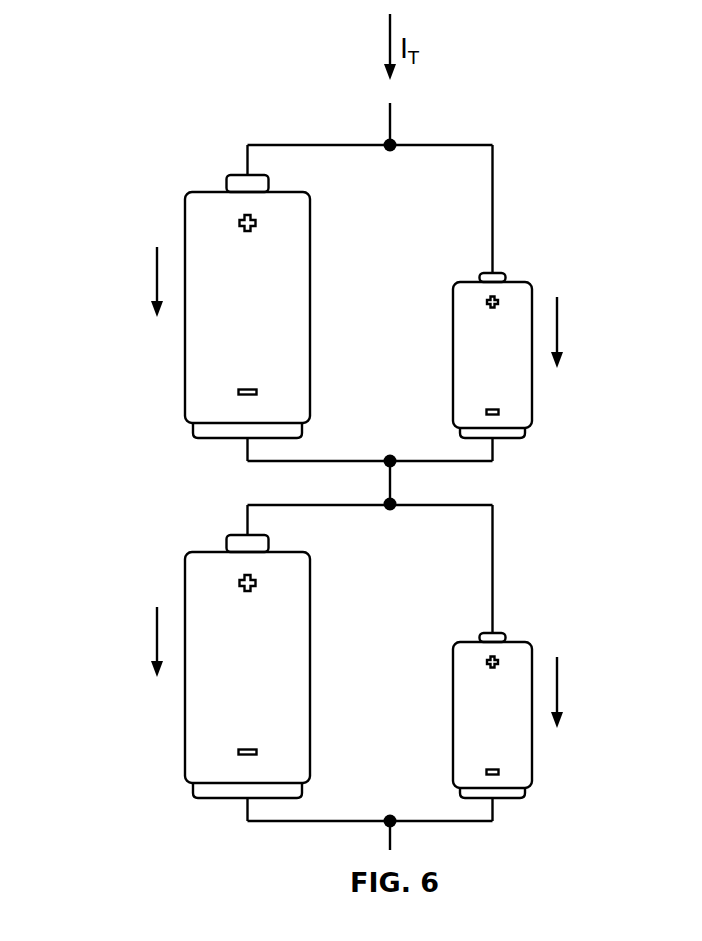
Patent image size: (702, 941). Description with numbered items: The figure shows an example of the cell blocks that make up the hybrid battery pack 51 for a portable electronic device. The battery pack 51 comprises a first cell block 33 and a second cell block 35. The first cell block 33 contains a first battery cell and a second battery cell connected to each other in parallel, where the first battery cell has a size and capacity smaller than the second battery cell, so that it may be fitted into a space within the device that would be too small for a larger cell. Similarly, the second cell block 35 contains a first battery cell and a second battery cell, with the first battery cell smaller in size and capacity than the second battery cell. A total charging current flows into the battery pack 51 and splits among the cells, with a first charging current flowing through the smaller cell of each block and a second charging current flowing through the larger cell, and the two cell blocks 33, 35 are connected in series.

The first cell block 33 is at (88, 241).
The second cell block 35 is at (88, 584).
The hybrid battery pack 51 is at (115, 732).